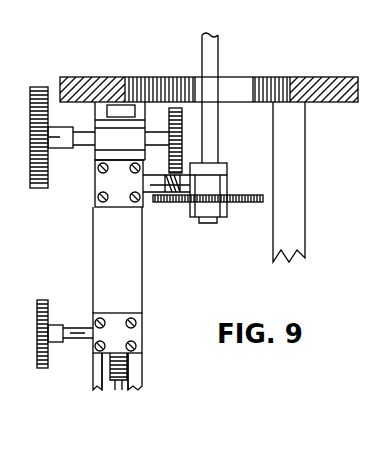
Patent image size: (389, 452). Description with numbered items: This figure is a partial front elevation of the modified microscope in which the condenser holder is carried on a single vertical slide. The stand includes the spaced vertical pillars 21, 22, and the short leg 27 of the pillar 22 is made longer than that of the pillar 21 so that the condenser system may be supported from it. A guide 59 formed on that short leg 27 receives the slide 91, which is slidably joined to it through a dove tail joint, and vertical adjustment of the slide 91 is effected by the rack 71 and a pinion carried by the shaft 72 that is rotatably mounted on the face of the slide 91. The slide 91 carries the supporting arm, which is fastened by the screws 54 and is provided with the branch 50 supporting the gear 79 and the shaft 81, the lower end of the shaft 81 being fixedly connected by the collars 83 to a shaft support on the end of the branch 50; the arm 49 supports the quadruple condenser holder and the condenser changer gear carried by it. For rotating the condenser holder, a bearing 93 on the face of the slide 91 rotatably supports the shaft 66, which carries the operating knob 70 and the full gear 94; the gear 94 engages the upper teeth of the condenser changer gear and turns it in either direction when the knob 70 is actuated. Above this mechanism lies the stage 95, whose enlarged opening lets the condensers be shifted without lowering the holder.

The stage 95 is at (90, 78).
The shaft 81 is at (212, 62).
The pillar 21 is at (293, 212).
The operating knob 70 is at (38, 88).
The shaft 66 is at (83, 146).
The bearing 93 is at (100, 130).
The full gear 94 is at (180, 117).
The screws 54 is at (100, 172).
The branch 50 is at (149, 180).
The gear 79 is at (248, 203).
The arm 49 is at (177, 203).
The collars 83 is at (218, 172).
The slide 91 is at (130, 290).
The pillar 22 is at (147, 363).
The shaft 72 is at (75, 328).
The short leg 27 is at (97, 372).
The guide 59 is at (117, 377).
The rack 71 is at (117, 373).